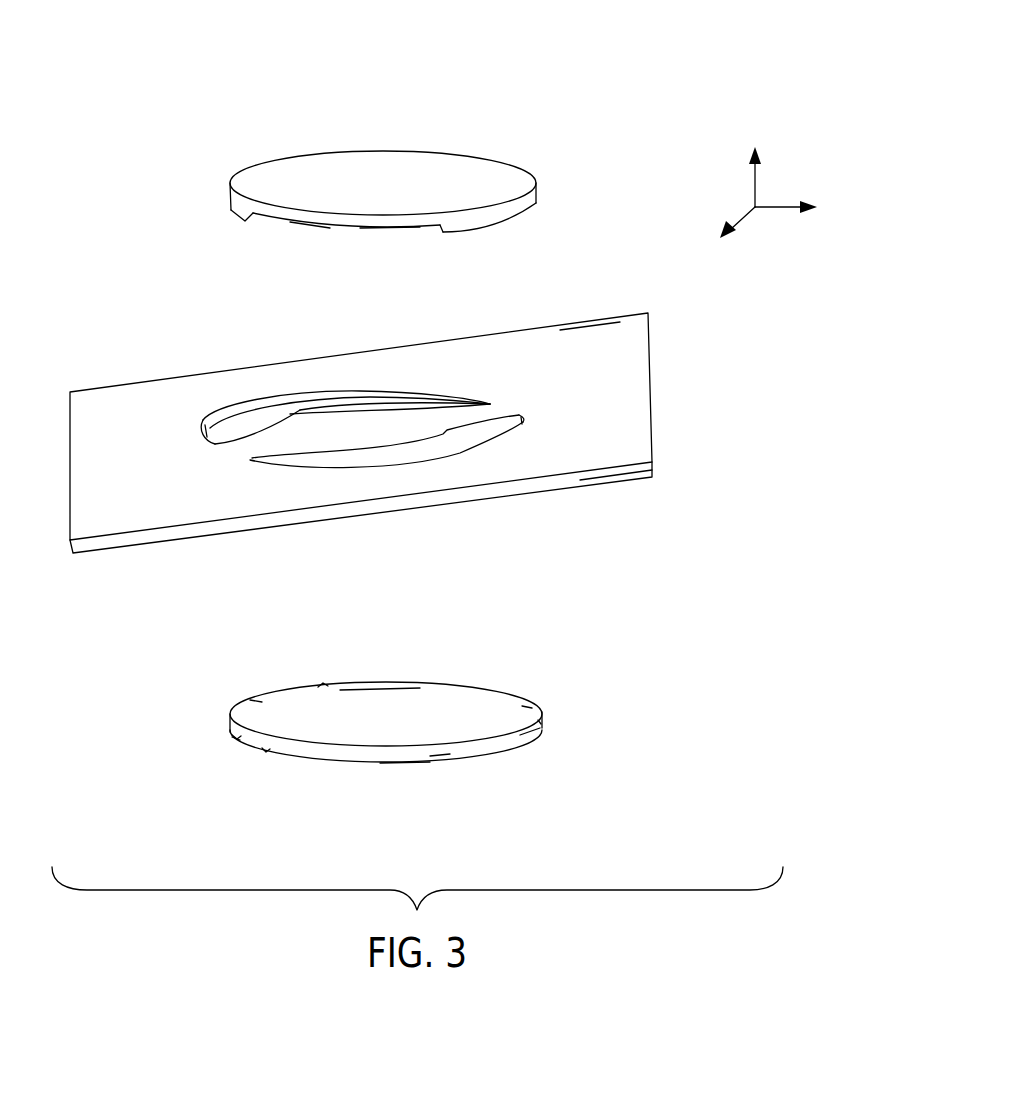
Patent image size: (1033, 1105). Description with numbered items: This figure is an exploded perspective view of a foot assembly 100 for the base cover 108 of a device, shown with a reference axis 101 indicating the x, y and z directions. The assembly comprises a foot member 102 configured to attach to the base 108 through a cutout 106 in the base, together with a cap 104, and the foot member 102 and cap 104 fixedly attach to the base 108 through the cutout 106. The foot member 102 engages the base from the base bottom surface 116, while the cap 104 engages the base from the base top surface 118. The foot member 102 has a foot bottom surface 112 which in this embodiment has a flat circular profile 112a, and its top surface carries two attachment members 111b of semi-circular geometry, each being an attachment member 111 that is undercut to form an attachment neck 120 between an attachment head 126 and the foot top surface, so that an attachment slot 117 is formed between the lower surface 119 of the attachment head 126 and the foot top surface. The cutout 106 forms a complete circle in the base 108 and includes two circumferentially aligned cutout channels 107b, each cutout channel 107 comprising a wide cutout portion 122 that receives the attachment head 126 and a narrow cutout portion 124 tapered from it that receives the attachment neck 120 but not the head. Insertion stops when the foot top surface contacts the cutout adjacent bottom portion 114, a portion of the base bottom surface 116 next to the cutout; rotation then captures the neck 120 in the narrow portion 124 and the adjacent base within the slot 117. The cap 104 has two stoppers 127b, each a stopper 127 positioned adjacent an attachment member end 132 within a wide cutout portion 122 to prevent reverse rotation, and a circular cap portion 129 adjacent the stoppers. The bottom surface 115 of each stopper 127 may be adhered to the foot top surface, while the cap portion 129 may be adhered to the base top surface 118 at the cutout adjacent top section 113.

The foot assembly 100 is at (472, 74).
The axis 101 is at (757, 187).
The foot member 102 is at (500, 690).
The cap 104 is at (487, 170).
The cutout 106 is at (250, 410).
The cutout channel 107 is at (355, 430).
The cutout channels 107b is at (203, 427).
The base cover 108 is at (637, 383).
The attachment member 111 is at (379, 678).
The attachment members 111b is at (257, 700).
The foot bottom surface 112 is at (419, 792).
The flat circular profile 112a is at (407, 763).
The cutout adjacent top section 113 is at (395, 427).
The cutout adjacent bottom portion 114 is at (297, 408).
The bottom surface of the stopper 115 is at (313, 223).
The base bottom surface 116 is at (616, 497).
The attachment slot 117 is at (530, 733).
The base top surface 118 is at (585, 340).
The lower surface of the attachment head 119 is at (377, 690).
The attachment neck 120 is at (443, 755).
The wide cutout portion 122 is at (455, 437).
The narrow cutout portion 124 is at (365, 413).
The attachment head 126 is at (230, 715).
The stopper 127 is at (384, 202).
The stoppers 127b is at (235, 207).
The cap portion 129 is at (387, 228).
The attachment member end 132 is at (477, 685).